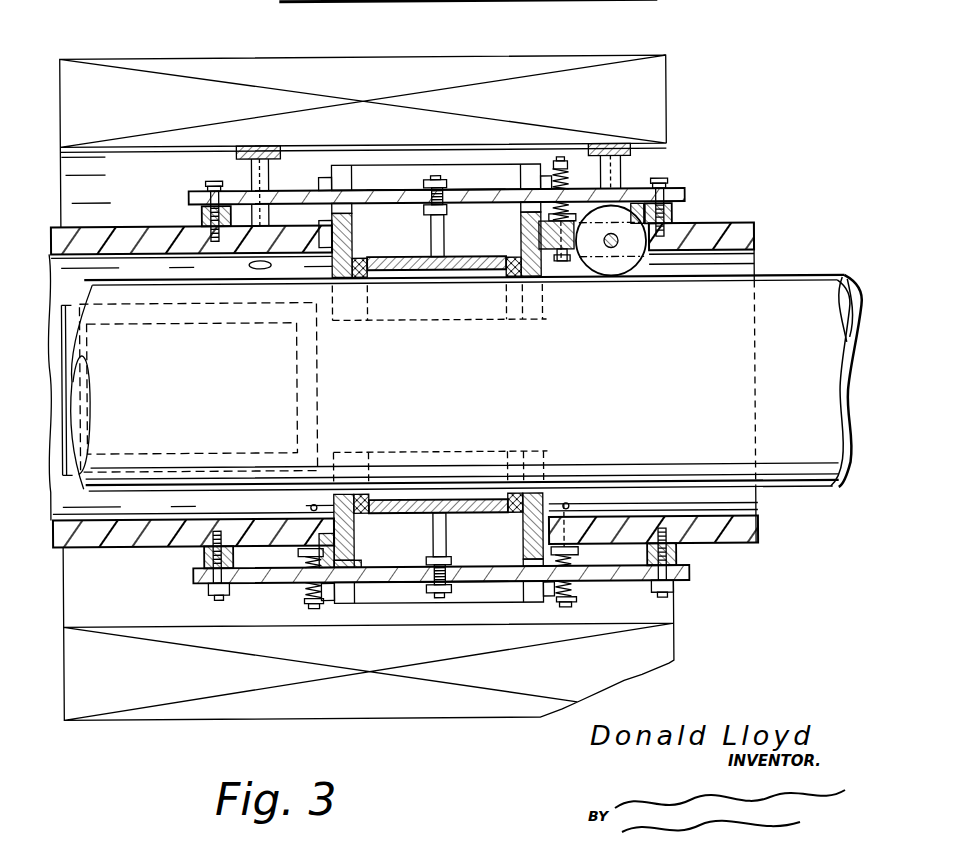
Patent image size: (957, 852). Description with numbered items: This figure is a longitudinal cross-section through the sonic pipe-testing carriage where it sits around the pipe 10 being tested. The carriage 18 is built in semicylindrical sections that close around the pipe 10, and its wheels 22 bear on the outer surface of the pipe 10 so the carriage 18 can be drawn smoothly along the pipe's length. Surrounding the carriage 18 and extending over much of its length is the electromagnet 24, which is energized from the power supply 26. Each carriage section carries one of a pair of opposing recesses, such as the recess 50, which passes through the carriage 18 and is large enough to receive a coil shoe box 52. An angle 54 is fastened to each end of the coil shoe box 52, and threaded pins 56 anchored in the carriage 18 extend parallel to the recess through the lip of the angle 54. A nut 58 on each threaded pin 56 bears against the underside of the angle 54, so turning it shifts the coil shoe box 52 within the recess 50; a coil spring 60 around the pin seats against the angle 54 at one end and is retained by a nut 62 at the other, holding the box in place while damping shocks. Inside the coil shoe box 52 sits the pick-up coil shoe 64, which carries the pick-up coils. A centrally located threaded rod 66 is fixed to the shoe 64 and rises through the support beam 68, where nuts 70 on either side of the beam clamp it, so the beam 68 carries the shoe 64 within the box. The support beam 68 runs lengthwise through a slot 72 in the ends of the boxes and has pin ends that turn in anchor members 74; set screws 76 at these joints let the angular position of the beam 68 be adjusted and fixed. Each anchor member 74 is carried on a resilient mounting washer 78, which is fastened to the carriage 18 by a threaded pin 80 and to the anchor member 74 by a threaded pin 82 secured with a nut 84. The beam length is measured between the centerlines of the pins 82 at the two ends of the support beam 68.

The pipe 10 is at (810, 277).
The carriage 18 is at (743, 224).
The wheels 22 is at (608, 267).
The electromagnet 24 is at (162, 72).
The power supply 26 is at (638, 180).
The recess 50 is at (333, 247).
The coil shoe box 52 is at (353, 223).
The angle 54 is at (575, 208).
The threaded pins 56 is at (563, 162).
The nut 58 is at (600, 237).
The coil spring 60 is at (555, 177).
The nut 62 is at (573, 173).
The pick-up coil shoe 64 is at (453, 257).
The threaded rod 66 is at (447, 223).
The support beam 68 is at (492, 188).
The nuts 70 is at (448, 180).
The slot 72 is at (353, 172).
The anchor member 74 is at (197, 197).
The set screw 76 is at (230, 190).
The resilient mounting washer 78 is at (203, 213).
The threaded pin 80 is at (703, 208).
The threaded pin 82 is at (215, 180).
The nut 84 is at (207, 183).